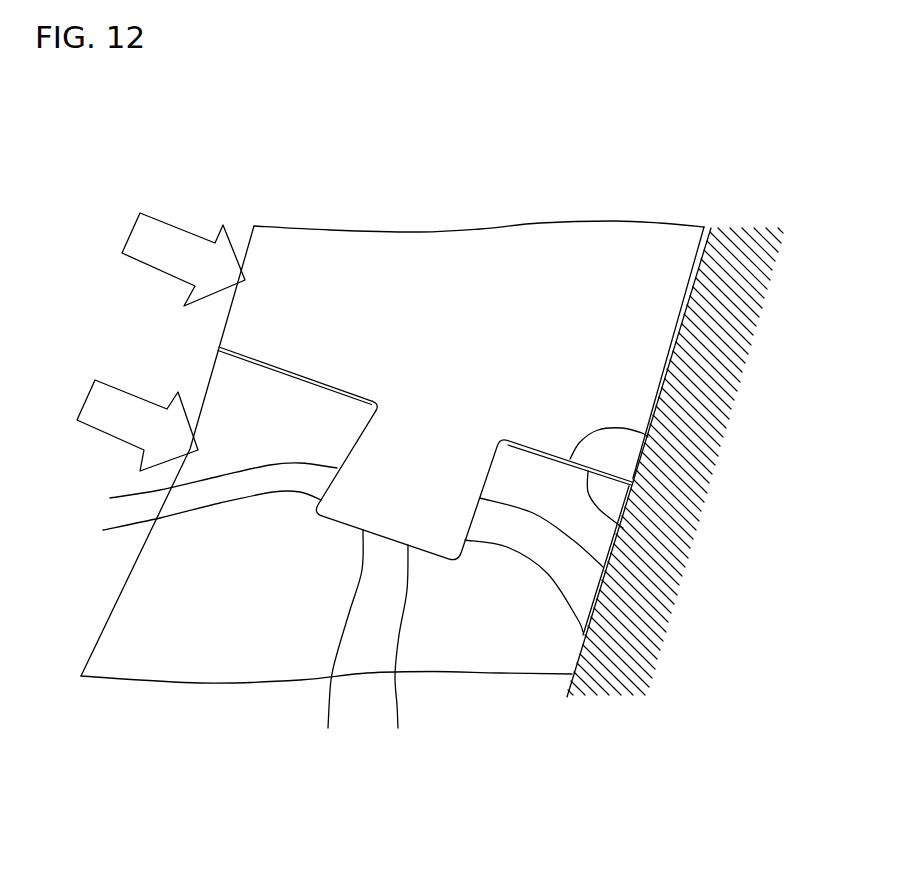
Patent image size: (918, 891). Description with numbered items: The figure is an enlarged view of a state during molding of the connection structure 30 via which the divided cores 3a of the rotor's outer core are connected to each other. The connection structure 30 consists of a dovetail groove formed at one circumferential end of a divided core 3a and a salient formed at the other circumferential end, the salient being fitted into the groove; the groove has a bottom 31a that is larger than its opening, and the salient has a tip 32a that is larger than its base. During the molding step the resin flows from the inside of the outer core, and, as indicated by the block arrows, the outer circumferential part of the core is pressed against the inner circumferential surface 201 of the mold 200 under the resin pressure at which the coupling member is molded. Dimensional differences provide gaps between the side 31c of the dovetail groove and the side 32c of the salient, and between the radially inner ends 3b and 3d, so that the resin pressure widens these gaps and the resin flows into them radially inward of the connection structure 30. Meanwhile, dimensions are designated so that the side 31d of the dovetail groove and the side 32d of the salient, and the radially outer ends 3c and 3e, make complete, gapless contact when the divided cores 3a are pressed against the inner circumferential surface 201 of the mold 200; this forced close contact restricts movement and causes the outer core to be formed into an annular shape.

The divided core 3a is at (467, 252).
The radially inner end 3b is at (287, 373).
The radially outer end 3c is at (620, 528).
The radially inner end 3d is at (280, 366).
The radially outer end 3e is at (653, 436).
The connection structure 30 is at (502, 645).
The bottom 31a is at (404, 650).
The side 31c is at (201, 486).
The side 31d is at (603, 653).
The tip 32a is at (340, 643).
The side 32c is at (193, 515).
The side 32d is at (648, 620).
The mold 200 is at (743, 250).
The inner circumferential surface 201 is at (693, 521).